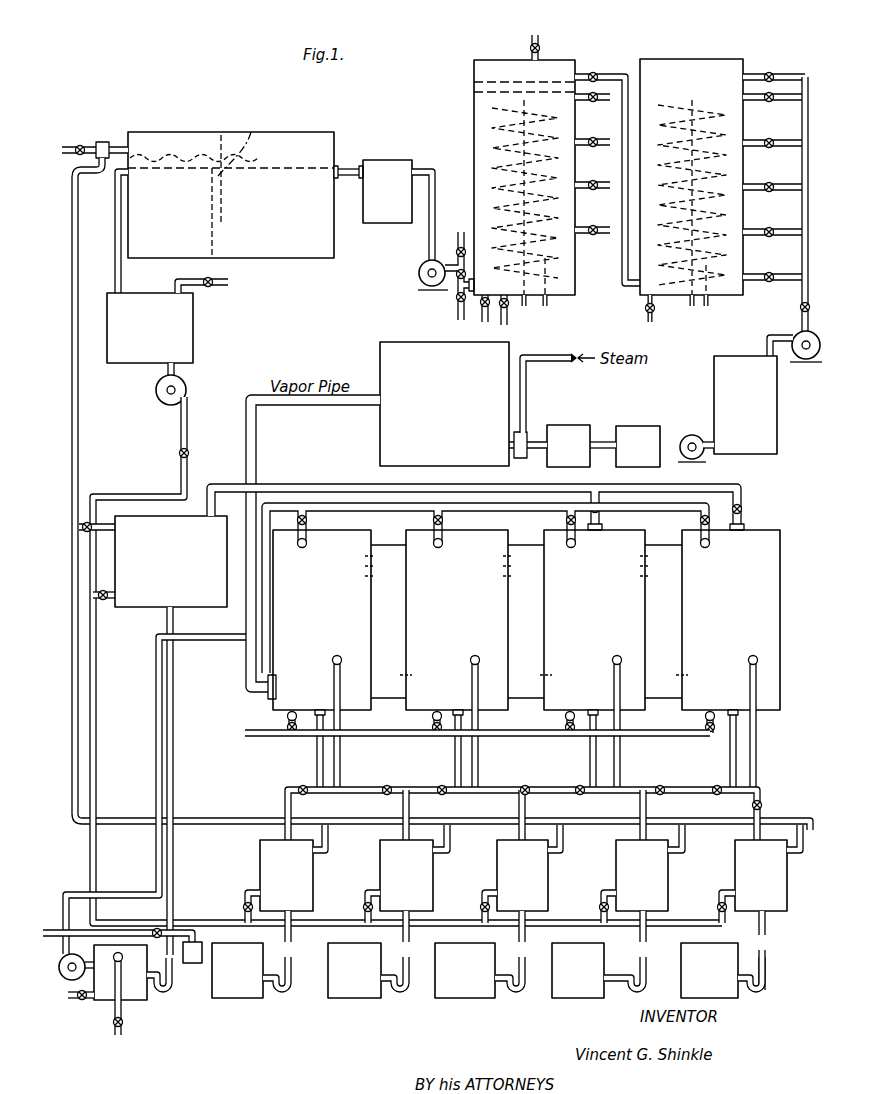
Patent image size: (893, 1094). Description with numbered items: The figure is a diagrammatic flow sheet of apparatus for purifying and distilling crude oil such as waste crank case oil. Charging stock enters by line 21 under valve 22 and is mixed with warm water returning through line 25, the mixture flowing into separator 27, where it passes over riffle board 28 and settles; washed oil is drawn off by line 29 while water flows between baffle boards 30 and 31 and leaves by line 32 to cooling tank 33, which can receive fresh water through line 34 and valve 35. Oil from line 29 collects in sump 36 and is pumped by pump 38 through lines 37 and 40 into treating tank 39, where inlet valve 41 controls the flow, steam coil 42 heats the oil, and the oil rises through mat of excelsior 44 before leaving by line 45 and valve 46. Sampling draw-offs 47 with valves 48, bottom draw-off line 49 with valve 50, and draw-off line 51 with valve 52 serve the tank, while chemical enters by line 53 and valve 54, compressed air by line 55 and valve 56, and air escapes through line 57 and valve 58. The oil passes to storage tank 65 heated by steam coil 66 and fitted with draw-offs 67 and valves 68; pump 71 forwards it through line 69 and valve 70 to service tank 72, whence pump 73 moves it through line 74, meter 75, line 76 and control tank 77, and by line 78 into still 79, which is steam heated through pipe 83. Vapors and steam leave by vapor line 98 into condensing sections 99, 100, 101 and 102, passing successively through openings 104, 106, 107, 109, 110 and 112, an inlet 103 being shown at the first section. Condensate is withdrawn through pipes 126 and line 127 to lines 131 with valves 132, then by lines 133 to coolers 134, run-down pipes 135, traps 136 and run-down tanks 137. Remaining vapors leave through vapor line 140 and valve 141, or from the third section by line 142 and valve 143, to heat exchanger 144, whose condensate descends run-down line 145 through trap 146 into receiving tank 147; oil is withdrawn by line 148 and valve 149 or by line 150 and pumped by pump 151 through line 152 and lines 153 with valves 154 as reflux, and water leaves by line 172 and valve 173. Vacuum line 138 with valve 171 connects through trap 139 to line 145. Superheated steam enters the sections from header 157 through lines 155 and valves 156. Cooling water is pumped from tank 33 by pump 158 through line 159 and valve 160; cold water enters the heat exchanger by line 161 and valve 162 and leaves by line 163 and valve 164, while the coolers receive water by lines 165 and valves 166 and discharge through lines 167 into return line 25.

The line 21 is at (106, 141).
The valve 22 is at (82, 142).
The line 25 is at (79, 425).
The separator 27 is at (182, 124).
The riffle board 28 is at (251, 130).
The line 29 is at (350, 165).
The baffle board 30 is at (228, 198).
The baffle board 31 is at (210, 208).
The line 32 is at (116, 240).
The cooling tank 33 is at (190, 328).
The line 34 is at (193, 280).
The valve 35 is at (215, 282).
The sump 36 is at (392, 160).
The line 37 is at (428, 244).
The pump 38 is at (419, 271).
The treating tank 39 is at (500, 51).
The line 40 is at (456, 277).
The valve 41 is at (445, 285).
The steam coil 42 is at (558, 262).
The mat of excelsior 44 is at (474, 92).
The line 45 is at (617, 74).
The valve 46 is at (592, 66).
The draw-offs 47 is at (597, 147).
The valves 48 is at (596, 101).
The draw-off line 49 is at (476, 290).
The valve 50 is at (489, 310).
The draw-off line 51 is at (463, 312).
The valve 52 is at (459, 302).
The line 53 is at (461, 231).
The valve 54 is at (456, 253).
The line 55 is at (508, 320).
The valve 56 is at (510, 306).
The line 57 is at (540, 40).
The valve 58 is at (542, 50).
The storage tank 65 is at (694, 50).
The steam coil 66 is at (718, 262).
The draw-offs 67 is at (802, 74).
The valves 68 is at (769, 72).
The line 69 is at (800, 320).
The valve 70 is at (800, 305).
The pump 71 is at (805, 360).
The service tank 72 is at (778, 410).
The pump 73 is at (700, 440).
The line 74 is at (708, 440).
The meter 75 is at (641, 428).
The line 76 is at (606, 440).
The control tank 77 is at (565, 428).
The line 78 is at (535, 449).
The still 79 is at (402, 341).
The pipe 83 is at (562, 357).
The vapor line 98 is at (312, 406).
The section 99 is at (339, 620).
The section 100 is at (475, 620).
The section 101 is at (613, 620).
The section 102 is at (731, 620).
The inlet 103 is at (278, 684).
The opening 104 is at (372, 566).
The opening 106 is at (407, 680).
The opening 107 is at (523, 566).
The opening 109 is at (561, 677).
The opening 110 is at (659, 566).
The opening 112 is at (678, 676).
The pipes 126 is at (316, 762).
The line 127 is at (341, 762).
The lines 131 is at (500, 792).
The valves 132 is at (296, 789).
The lines 133 is at (292, 803).
The coolers 134 is at (305, 875).
The run-down pipes 135 is at (285, 935).
The trap 136 is at (287, 992).
The run-down tanks 137 is at (250, 996).
The vacuum line 138 is at (52, 930).
The trap 139 is at (192, 964).
The vapor line 140 is at (336, 487).
The valve 141 is at (745, 508).
The line 142 is at (600, 518).
The valve 143 is at (580, 504).
The heat exchanger 144 is at (146, 617).
The run-down line 145 is at (175, 680).
The trap 146 is at (164, 987).
The receiving tank 147 is at (133, 1000).
The line 148 is at (115, 1030).
The valve 149 is at (116, 1026).
The line 150 is at (88, 950).
The pump 151 is at (63, 977).
The line 152 is at (156, 740).
The lines 153 is at (307, 540).
The valves 154 is at (298, 520).
The lines 155 is at (287, 717).
The valves 156 is at (322, 712).
The header 157 is at (386, 733).
The pump 158 is at (187, 386).
The line 159 is at (189, 424).
The valve 160 is at (190, 454).
The line 161 is at (100, 600).
The valve 162 is at (98, 593).
The line 163 is at (108, 534).
The valve 164 is at (83, 530).
The lines 165 is at (243, 909).
The valves 166 is at (250, 893).
The lines 167 is at (328, 840).
The valve 171 is at (156, 929).
The line 172 is at (74, 999).
The valve 173 is at (84, 1000).